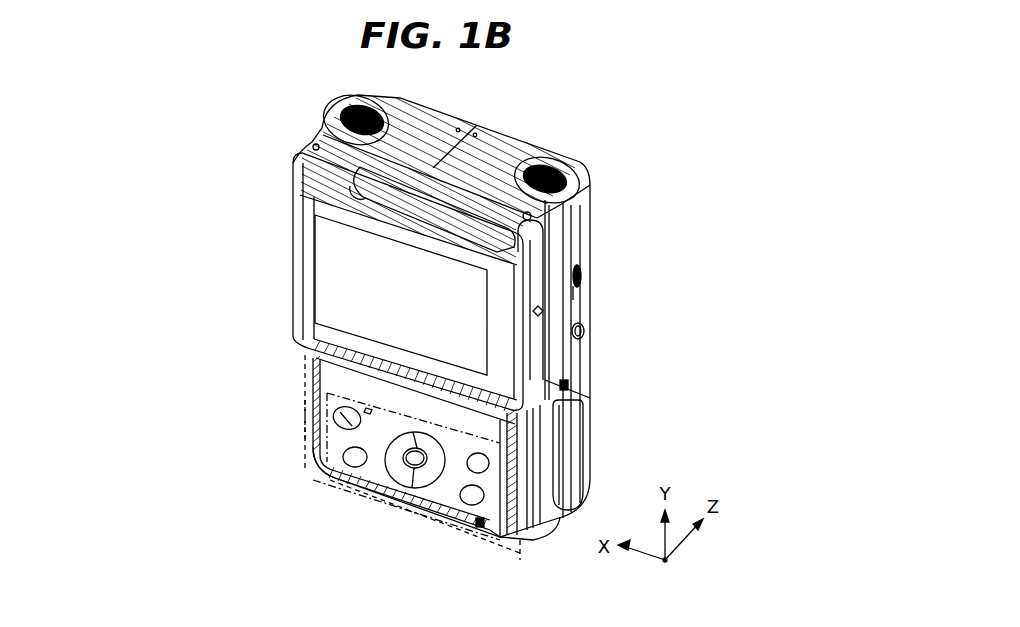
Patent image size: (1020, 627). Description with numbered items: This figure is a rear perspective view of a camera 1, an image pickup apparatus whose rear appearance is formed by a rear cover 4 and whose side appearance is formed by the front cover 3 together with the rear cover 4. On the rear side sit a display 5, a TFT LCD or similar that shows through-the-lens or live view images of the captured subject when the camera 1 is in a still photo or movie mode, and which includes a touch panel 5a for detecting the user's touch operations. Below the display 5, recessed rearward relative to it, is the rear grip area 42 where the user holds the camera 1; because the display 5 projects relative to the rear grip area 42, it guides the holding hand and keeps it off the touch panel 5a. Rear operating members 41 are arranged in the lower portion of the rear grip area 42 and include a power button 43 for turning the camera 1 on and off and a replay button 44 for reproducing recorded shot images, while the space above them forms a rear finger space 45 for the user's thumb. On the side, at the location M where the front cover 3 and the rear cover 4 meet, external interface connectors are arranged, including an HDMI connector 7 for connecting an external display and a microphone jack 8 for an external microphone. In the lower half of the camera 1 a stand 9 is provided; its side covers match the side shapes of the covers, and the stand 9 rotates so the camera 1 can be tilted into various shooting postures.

The camera 1 is at (125, 127).
The front cover 3 is at (590, 222).
The rear cover 4 is at (545, 312).
The display 5 is at (360, 270).
The touch panel 5a is at (318, 300).
The HDMI connector 7 is at (582, 270).
The location where the front cover and the rear cover meet M is at (580, 297).
The microphone jack 8 is at (582, 330).
The stand 9 is at (585, 440).
The rear operating members 41 is at (310, 418).
The rear grip area 42 is at (310, 412).
The power button 43 is at (340, 424).
The replay button 44 is at (350, 463).
The rear finger space 45 is at (318, 382).